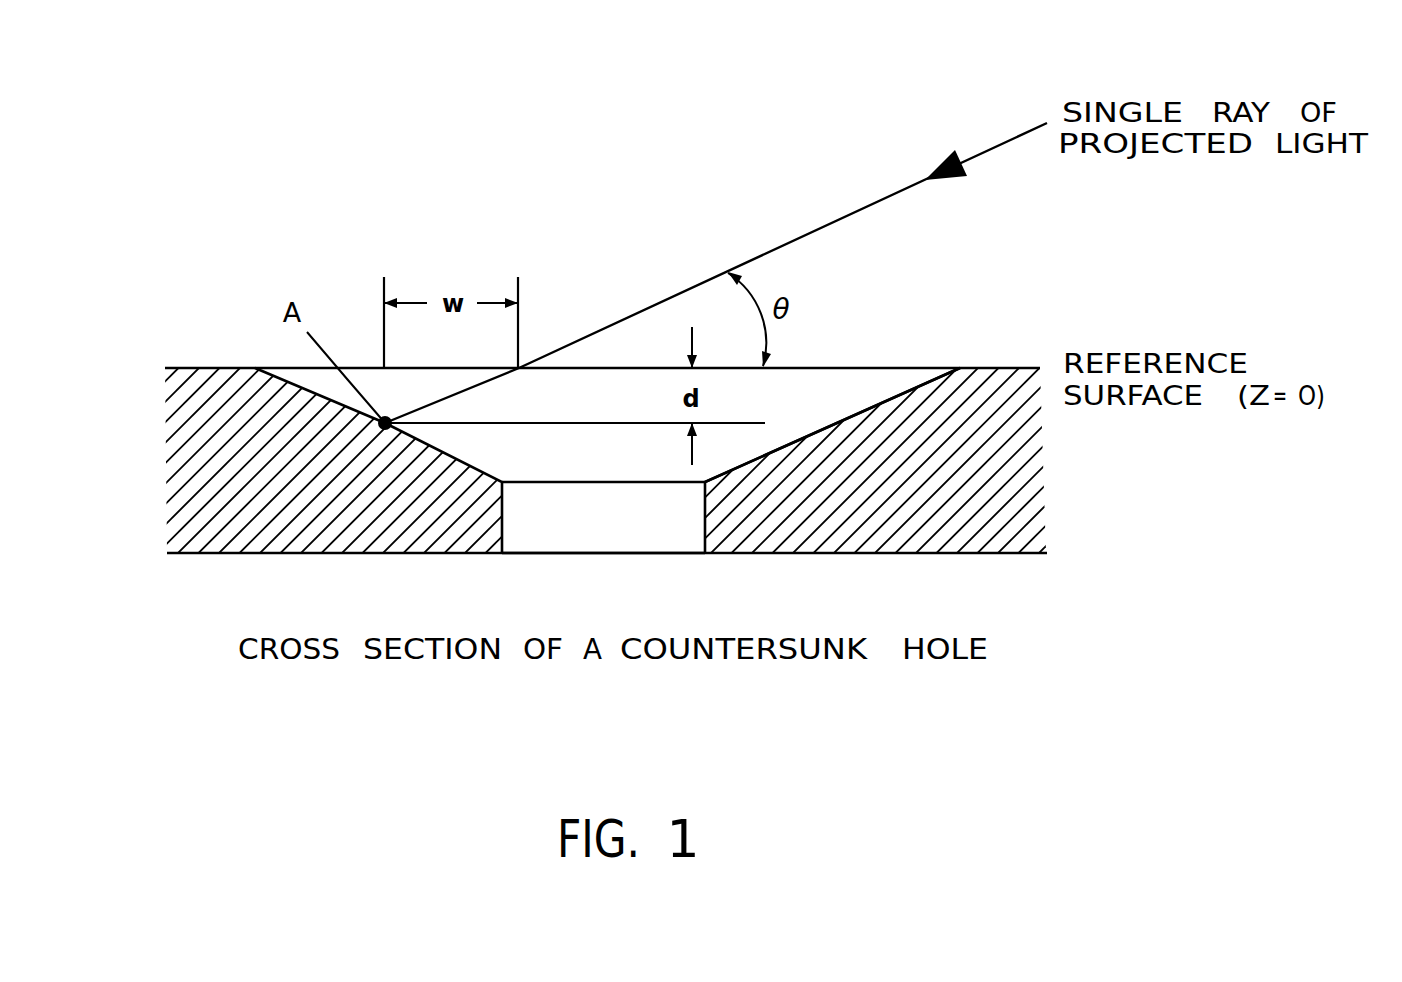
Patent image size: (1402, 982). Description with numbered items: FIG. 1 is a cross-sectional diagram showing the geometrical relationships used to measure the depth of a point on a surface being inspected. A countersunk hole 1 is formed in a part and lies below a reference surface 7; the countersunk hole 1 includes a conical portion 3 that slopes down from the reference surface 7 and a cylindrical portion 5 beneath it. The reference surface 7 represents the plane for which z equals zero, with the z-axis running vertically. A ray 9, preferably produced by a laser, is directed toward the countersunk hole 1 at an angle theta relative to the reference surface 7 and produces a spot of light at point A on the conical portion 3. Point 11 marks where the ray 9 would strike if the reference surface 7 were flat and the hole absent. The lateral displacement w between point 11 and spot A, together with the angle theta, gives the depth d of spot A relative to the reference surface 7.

The countersunk hole 1 is at (822, 417).
The conical portion 3 is at (808, 380).
The cylindrical portion 5 is at (592, 532).
The reference surface 7 is at (985, 367).
The ray 9 is at (795, 240).
The point 11 is at (518, 368).